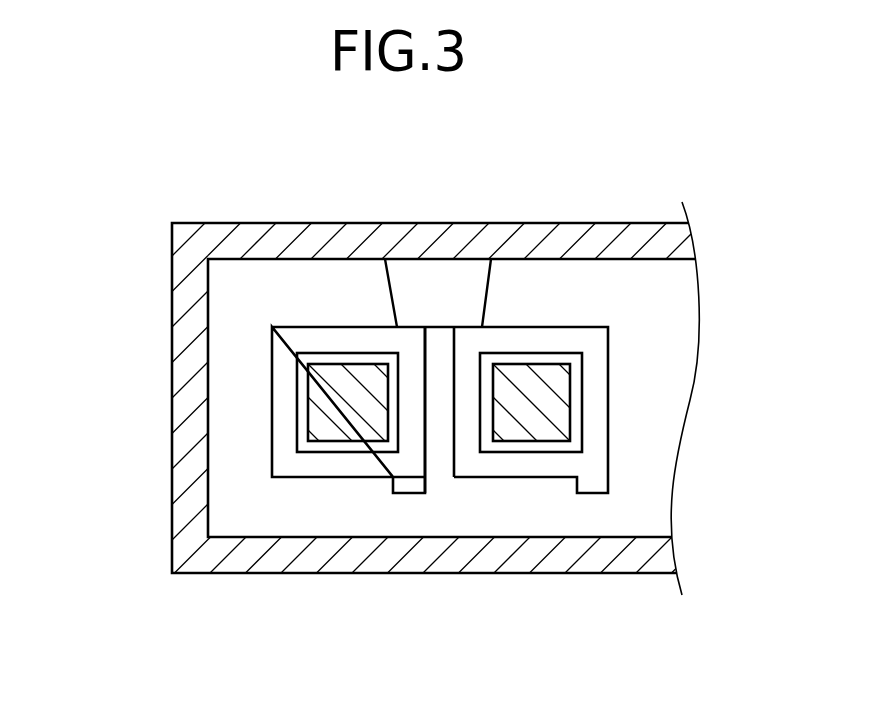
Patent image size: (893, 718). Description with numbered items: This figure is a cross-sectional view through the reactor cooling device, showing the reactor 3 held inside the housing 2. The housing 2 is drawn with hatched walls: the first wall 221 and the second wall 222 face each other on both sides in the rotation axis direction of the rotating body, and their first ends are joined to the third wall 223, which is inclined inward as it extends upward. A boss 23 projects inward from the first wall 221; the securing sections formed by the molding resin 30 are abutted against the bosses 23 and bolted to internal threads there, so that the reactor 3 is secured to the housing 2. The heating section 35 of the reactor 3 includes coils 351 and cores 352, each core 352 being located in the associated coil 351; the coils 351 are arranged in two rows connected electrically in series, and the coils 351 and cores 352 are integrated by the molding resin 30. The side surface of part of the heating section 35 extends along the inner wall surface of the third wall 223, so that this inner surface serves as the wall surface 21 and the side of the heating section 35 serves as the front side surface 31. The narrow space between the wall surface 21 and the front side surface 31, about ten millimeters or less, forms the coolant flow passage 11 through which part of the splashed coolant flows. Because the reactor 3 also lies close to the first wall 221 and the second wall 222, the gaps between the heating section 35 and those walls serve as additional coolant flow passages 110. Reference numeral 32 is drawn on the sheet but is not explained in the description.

The housing 2 is at (373, 413).
The wall surface 21 is at (206, 292).
The first wall 221 is at (500, 242).
The second wall 222 is at (557, 558).
The third wall 223 is at (195, 313).
The boss 23 is at (470, 290).
The coolant flow passage 11 is at (240, 360).
The coolant flow passage 110 is at (338, 297).
The reactor 3 is at (408, 382).
The molding resin 30 is at (440, 348).
The front side surface 31 is at (270, 397).
The second coil portion 32 is at (608, 378).
The heating section 35 is at (224, 404).
The coil 351 is at (287, 446).
The core 352 is at (342, 415).